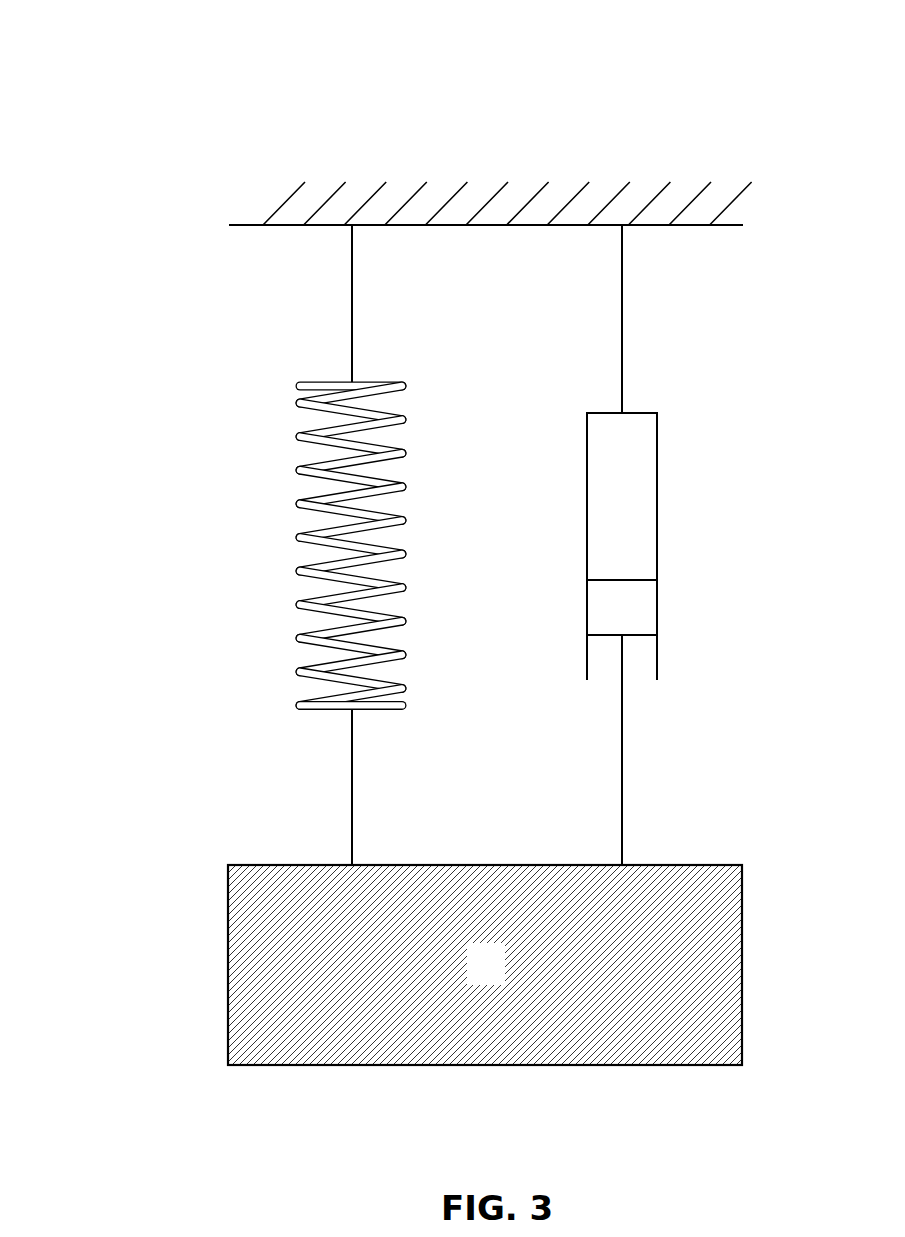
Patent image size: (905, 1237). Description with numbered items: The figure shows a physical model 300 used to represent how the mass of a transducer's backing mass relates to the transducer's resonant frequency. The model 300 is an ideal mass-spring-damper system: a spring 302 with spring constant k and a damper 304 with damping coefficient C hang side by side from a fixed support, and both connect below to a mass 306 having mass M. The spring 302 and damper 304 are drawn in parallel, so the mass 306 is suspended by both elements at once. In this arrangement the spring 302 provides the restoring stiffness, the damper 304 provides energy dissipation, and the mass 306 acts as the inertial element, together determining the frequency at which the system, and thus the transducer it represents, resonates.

The physical model 300 is at (162, 76).
The spring 302 is at (296, 386).
The damper 304 is at (637, 526).
The mass 306 is at (718, 948).